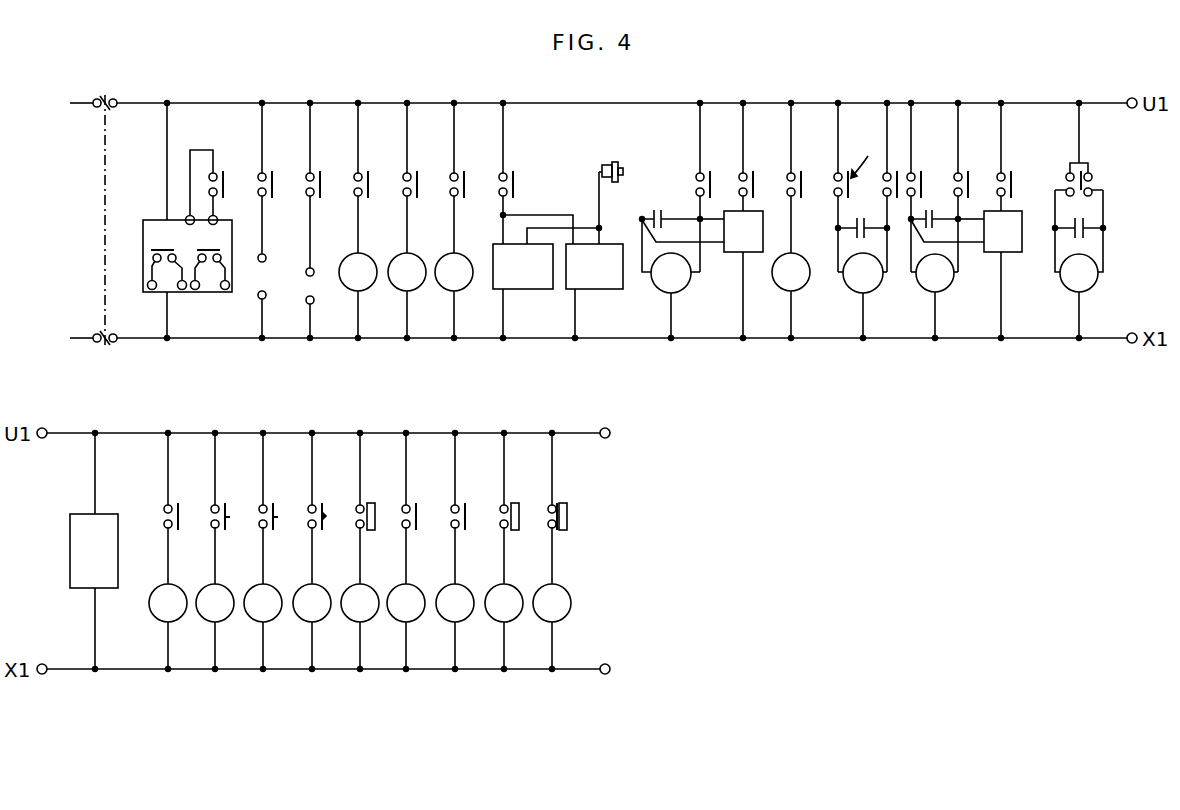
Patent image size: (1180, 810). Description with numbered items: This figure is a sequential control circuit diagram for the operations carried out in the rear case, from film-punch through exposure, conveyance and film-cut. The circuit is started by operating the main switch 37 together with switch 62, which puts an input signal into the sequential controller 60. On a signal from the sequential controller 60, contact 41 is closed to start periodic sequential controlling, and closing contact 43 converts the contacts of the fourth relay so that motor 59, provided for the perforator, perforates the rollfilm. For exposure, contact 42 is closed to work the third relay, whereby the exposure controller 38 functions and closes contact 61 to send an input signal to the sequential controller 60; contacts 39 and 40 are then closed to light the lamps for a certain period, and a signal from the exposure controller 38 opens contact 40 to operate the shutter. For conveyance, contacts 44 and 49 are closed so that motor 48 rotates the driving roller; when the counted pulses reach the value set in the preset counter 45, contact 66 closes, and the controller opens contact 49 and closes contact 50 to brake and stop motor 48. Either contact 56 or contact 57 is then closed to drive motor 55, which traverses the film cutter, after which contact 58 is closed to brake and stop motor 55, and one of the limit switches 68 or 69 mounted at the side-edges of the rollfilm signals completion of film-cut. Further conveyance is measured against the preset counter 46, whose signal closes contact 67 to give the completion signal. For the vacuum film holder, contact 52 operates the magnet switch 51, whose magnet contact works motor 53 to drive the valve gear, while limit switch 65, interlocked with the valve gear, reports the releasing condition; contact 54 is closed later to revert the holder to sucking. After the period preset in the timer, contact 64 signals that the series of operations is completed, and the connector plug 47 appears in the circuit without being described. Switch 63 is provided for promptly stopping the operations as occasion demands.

The main switch 37 is at (110, 97).
The exposure controller 38 is at (143, 221).
The contact 39 is at (266, 173).
The contact 40 is at (314, 173).
The contact 41 is at (362, 173).
The contact 42 is at (411, 173).
The contact 43 is at (458, 173).
The contact 44 is at (507, 173).
The preset counter 45 is at (530, 290).
The preset counter 46 is at (589, 290).
The connector plug 47 is at (612, 163).
The motor 48 is at (660, 293).
The contact 49 is at (704, 173).
The contact 50 is at (747, 173).
The magnet switch 51 is at (784, 291).
The contact 52 is at (795, 173).
The motor 53 is at (853, 293).
The contact 54 is at (890, 174).
The motor 55 is at (925, 292).
The contact 56 is at (915, 174).
The contact 57 is at (962, 173).
The contact 58 is at (1005, 173).
The motor 59 is at (1067, 291).
The sequential controller 60 is at (104, 514).
The contact 61 is at (172, 506).
The switch 62 is at (219, 506).
The switch 63 is at (267, 506).
The contact 64 is at (316, 506).
The limit switch 65 is at (364, 506).
The contact 66 is at (410, 506).
The contact 67 is at (459, 506).
The limit switch 68 is at (508, 506).
The limit switch 69 is at (556, 506).